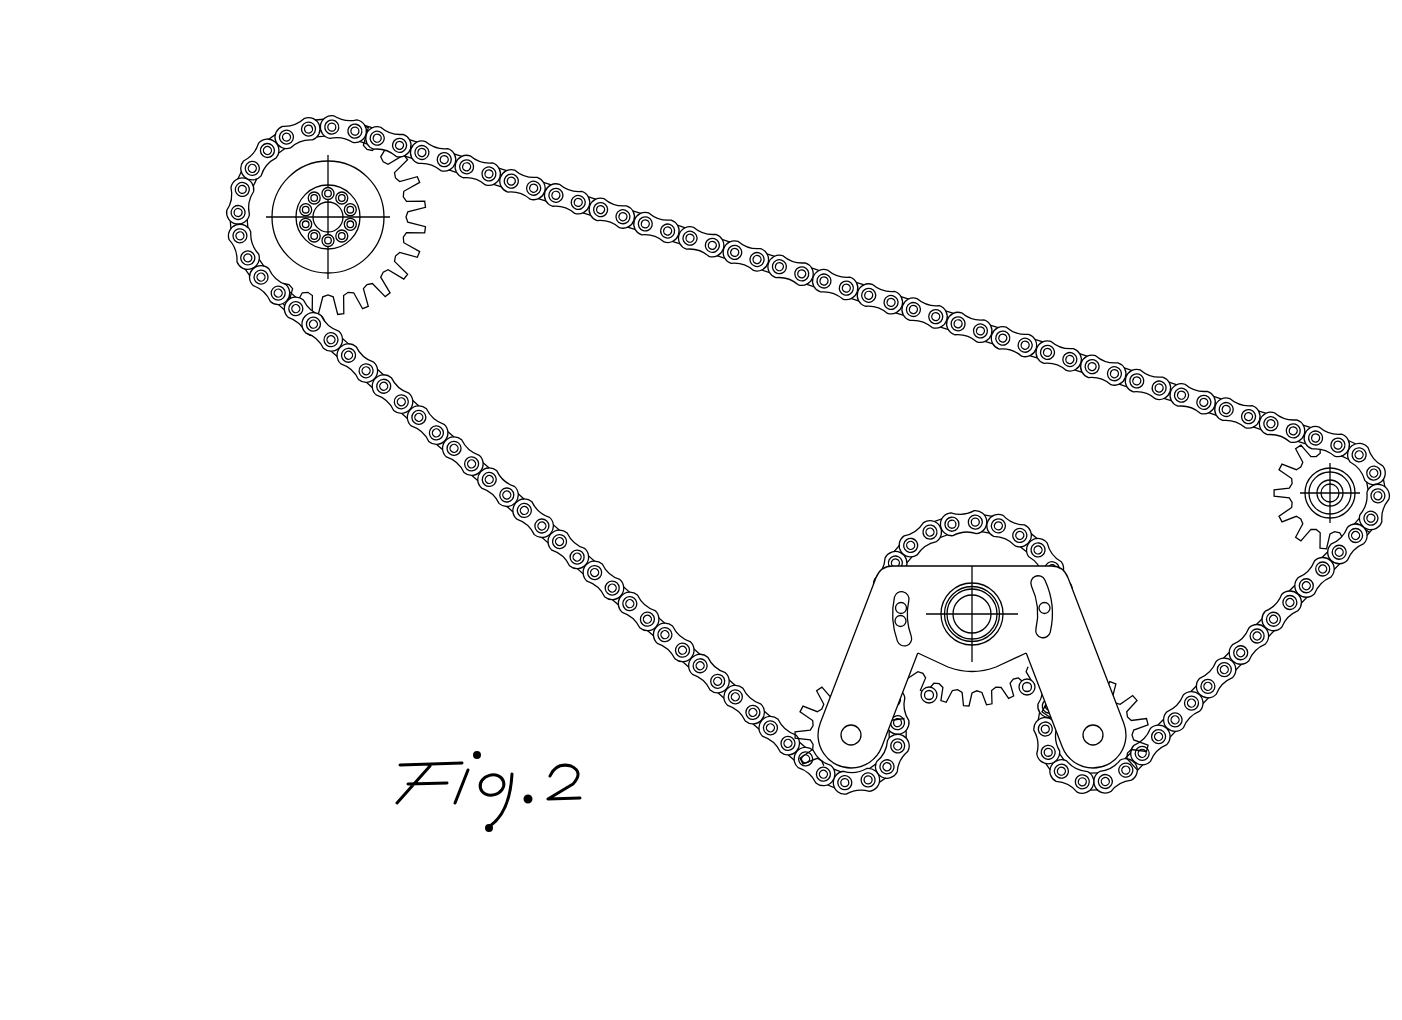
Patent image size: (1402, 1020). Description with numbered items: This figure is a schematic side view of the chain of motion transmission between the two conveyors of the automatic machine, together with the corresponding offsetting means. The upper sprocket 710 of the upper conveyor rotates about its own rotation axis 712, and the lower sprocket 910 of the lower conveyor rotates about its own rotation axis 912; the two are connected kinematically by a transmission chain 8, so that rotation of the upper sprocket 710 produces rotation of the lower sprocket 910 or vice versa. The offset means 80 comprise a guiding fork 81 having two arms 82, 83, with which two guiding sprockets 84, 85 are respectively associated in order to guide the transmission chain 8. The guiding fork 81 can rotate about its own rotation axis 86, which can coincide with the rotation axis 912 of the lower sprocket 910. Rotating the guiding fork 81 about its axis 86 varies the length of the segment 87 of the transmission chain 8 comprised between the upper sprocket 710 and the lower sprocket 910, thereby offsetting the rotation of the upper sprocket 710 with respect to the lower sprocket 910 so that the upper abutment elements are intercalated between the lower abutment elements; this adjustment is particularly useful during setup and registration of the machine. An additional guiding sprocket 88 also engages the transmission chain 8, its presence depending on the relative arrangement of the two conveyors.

The transmission chain 8 is at (809, 455).
The upper sprocket 710 is at (294, 180).
The rotation axis 712 is at (324, 218).
The sprocket 88 is at (1345, 478).
The segment 87 is at (516, 522).
The offset means 80 is at (978, 648).
The guiding fork 81 is at (1005, 583).
The arm 82 is at (848, 705).
The arm 83 is at (1087, 705).
The guiding sprocket 84 is at (818, 745).
The guiding sprocket 85 is at (1140, 752).
The rotation axis 86 is at (956, 563).
The rotation axis 912 is at (970, 612).
The lower sprocket 910 is at (965, 683).